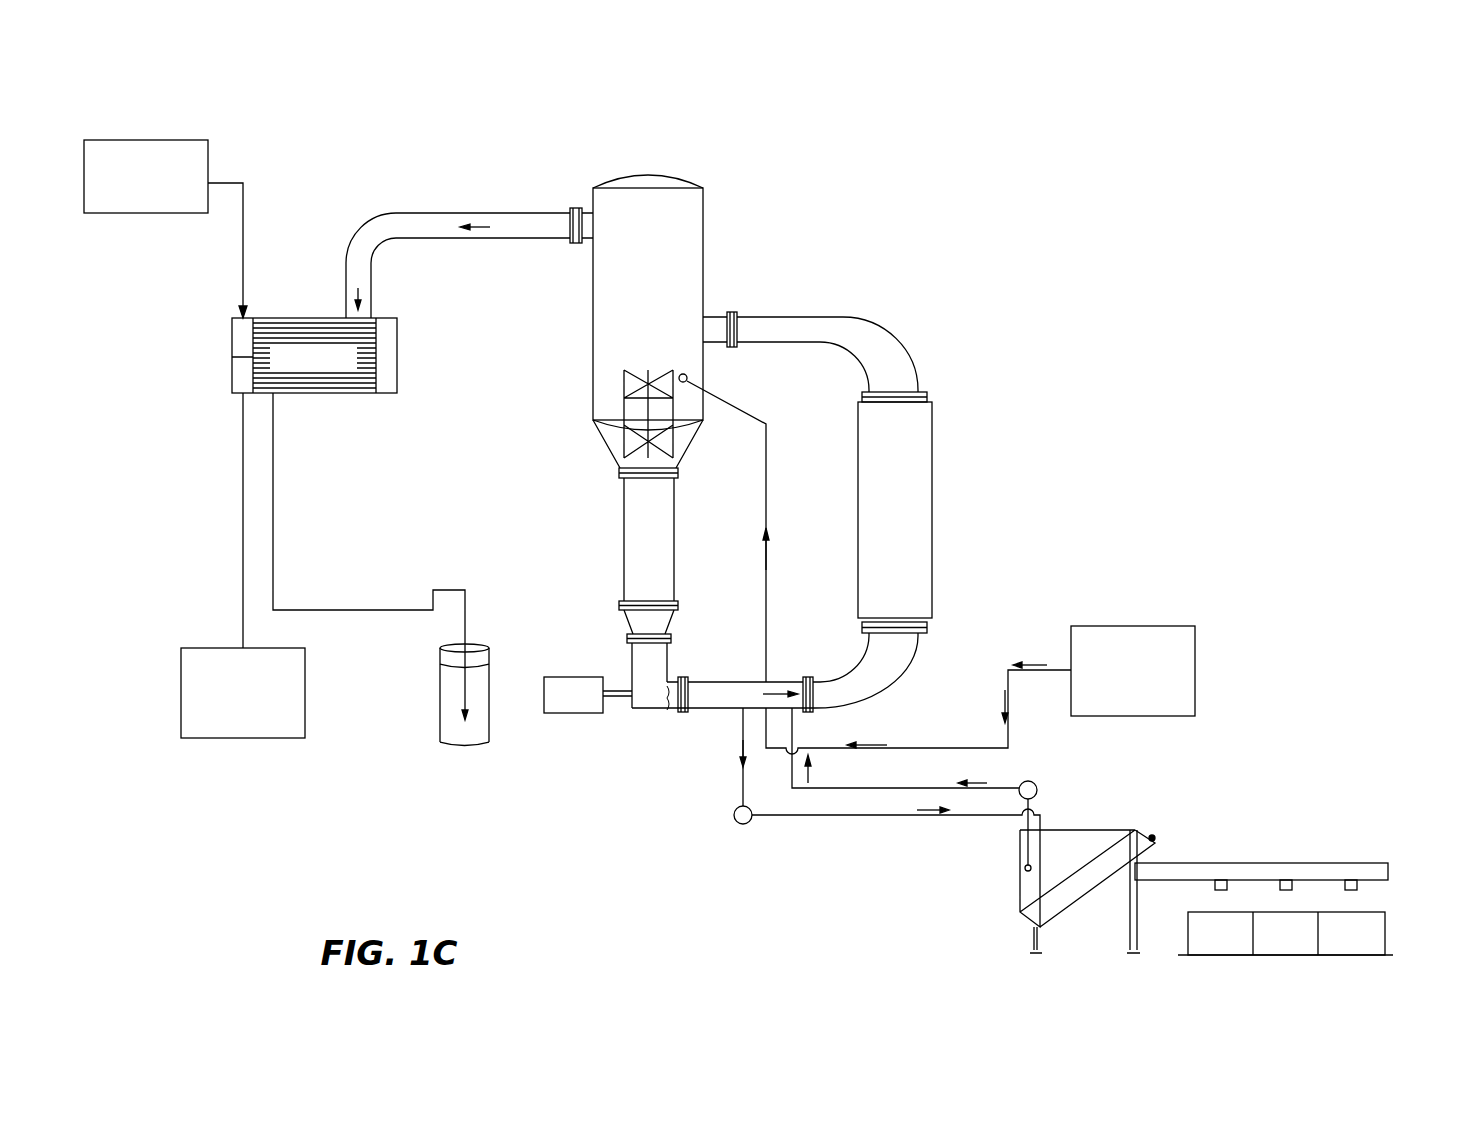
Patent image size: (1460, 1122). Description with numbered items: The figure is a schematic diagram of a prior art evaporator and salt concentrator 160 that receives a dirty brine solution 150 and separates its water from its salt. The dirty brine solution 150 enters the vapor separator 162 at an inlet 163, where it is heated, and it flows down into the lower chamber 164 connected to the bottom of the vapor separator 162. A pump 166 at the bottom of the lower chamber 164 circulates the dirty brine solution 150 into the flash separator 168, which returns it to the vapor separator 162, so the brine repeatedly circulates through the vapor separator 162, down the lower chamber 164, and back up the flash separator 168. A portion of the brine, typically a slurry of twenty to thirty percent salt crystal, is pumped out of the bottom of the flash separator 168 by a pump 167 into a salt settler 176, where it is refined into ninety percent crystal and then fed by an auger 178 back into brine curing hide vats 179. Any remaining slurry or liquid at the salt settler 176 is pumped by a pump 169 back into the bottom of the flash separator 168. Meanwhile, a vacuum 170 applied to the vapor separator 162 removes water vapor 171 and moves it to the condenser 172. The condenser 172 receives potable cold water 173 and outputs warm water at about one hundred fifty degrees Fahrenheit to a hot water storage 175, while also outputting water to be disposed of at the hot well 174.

The dirty brine solution 150 is at (1175, 627).
The evaporator and salt concentrator 160 is at (1015, 252).
The vapor separator 162 is at (703, 215).
The inlet 163 is at (688, 378).
The lower chamber 164 is at (637, 530).
The pump 166 is at (585, 675).
The pump 167 is at (743, 825).
The flash separator 168 is at (928, 445).
The pump 169 is at (1035, 781).
The vacuum 170 is at (645, 175).
The water vapor 171 is at (477, 215).
The condenser 172 is at (354, 395).
The potable cold water 173 is at (143, 138).
The hot well 174 is at (477, 642).
The hot water storage 175 is at (202, 647).
The salt settler 176 is at (1157, 833).
The auger 178 is at (1317, 863).
The brine curing hide vats 179 is at (1385, 933).